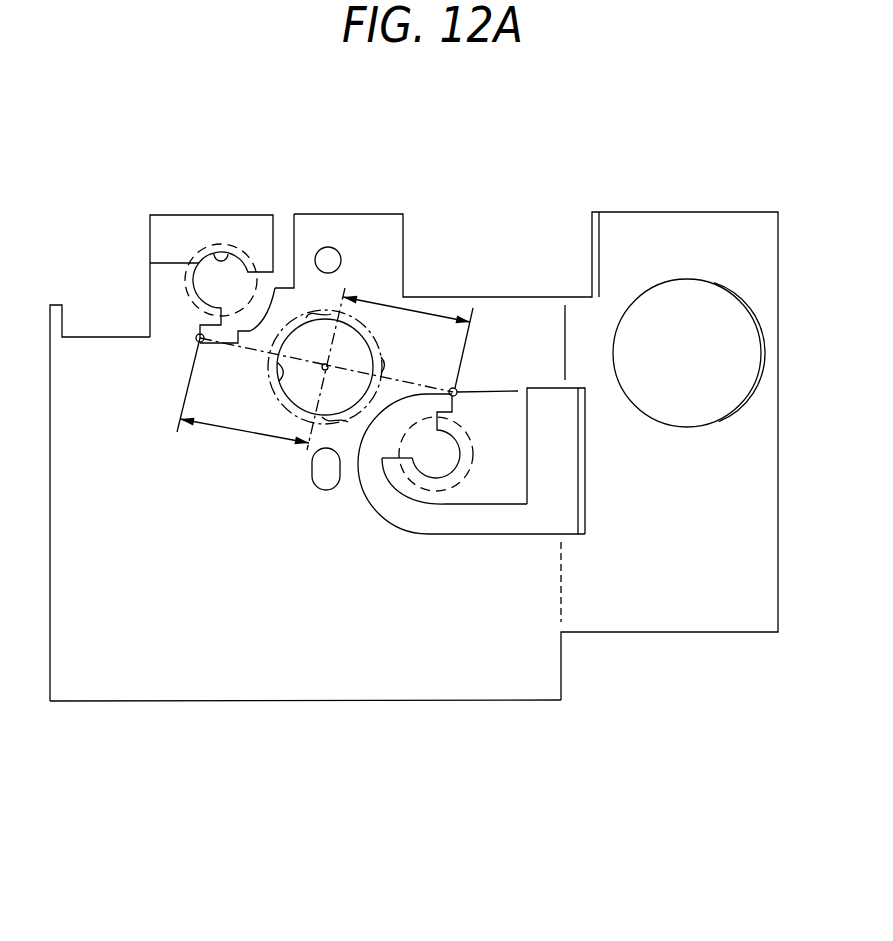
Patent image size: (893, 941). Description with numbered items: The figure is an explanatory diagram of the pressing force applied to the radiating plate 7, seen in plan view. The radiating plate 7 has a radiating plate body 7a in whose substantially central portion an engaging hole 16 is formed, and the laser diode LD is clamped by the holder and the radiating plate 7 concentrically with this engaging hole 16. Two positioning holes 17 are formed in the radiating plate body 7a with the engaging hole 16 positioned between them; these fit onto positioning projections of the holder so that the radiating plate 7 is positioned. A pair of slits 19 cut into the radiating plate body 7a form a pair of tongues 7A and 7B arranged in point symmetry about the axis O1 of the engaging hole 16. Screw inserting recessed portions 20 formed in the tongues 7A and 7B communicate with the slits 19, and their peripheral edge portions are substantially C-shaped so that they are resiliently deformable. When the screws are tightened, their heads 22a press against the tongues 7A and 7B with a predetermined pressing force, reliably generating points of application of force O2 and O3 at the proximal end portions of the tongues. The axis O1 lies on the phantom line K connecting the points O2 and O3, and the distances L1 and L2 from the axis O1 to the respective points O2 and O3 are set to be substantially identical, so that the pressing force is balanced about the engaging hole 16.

The radiating plate 7 is at (512, 296).
The tongue 7A is at (192, 227).
The tongue 7B is at (514, 490).
The radiating plate body 7a is at (348, 674).
The engaging hole 16 is at (276, 375).
The positioning holes 17 is at (330, 257).
The slits 19 is at (282, 228).
The screw inserting recessed portions 20 is at (216, 254).
The screw head 22a is at (150, 263).
The phantom line K is at (312, 299).
The axis of the engaging hole O1 is at (386, 368).
The point of application of force O2 is at (196, 346).
The point of application of force O3 is at (457, 388).
The distance L1 is at (237, 430).
The distance L2 is at (393, 298).
The laser diode LD is at (279, 402).